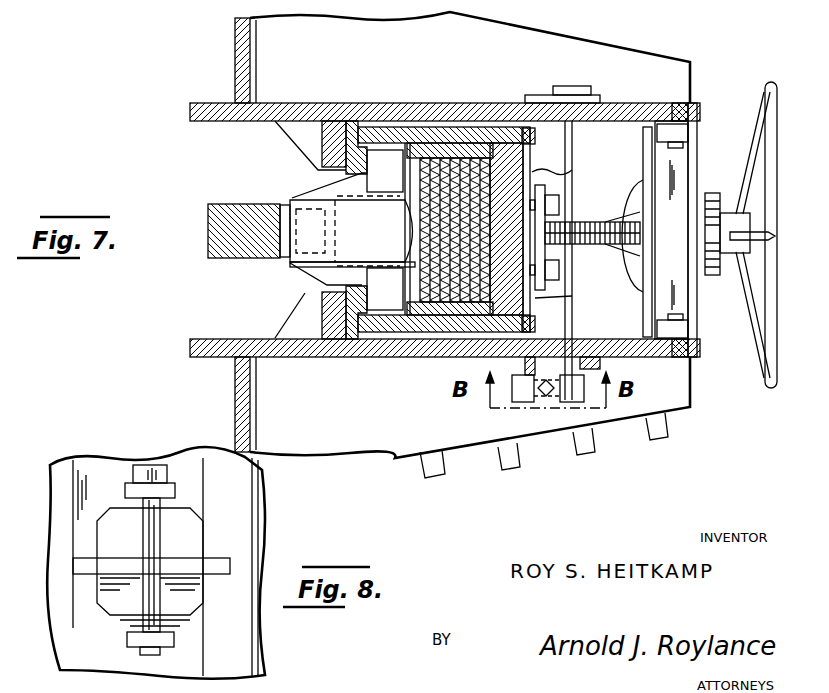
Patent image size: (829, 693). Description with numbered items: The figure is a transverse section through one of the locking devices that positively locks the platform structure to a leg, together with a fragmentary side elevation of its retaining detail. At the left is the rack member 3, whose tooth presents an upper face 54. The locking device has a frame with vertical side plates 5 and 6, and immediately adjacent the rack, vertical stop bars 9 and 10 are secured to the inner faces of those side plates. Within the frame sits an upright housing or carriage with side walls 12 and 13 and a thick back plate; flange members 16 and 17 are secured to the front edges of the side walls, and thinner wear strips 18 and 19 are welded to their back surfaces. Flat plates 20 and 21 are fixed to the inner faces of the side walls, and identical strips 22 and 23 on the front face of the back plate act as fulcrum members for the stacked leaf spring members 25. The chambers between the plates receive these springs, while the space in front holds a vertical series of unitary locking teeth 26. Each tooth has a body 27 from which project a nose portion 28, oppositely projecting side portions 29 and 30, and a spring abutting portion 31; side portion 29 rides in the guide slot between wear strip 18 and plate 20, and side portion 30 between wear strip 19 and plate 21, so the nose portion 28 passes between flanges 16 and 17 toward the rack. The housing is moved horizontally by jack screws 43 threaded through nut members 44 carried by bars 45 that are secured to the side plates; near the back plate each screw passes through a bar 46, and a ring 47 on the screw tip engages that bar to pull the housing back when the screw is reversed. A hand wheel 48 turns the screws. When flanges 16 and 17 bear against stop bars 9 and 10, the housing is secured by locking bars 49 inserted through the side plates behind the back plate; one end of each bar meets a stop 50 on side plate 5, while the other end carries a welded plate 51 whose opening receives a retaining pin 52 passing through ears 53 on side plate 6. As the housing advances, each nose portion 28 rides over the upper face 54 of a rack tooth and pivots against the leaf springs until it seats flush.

In FIG. 7, the rack member 3 is at (232, 205).
In FIG. 7, the vertical side plate 5 is at (378, 110).
In FIG. 7, the vertical side plate 6 is at (638, 357).
In FIG. 8, the vertical side plate 6 is at (62, 645).
In FIG. 7, the vertical stop bar 9 is at (322, 143).
In FIG. 7, the vertical stop bar 10 is at (322, 300).
In FIG. 7, the side wall 12 is at (400, 132).
In FIG. 7, the side wall 13 is at (398, 357).
In FIG. 7, the flange member 16 is at (354, 140).
In FIG. 7, the flange member 17 is at (352, 357).
In FIG. 7, the wear strip 18 is at (368, 183).
In FIG. 7, the wear strip 19 is at (368, 279).
In FIG. 7, the flat plate 20 is at (458, 148).
In FIG. 7, the flat plate 21 is at (440, 357).
In FIG. 7, the strip 22 is at (506, 229).
In FIG. 7, the strip 23 is at (495, 312).
In FIG. 7, the leaf spring member 25 is at (430, 250).
In FIG. 7, the locking tooth 26 is at (292, 265).
In FIG. 7, the body 27 is at (368, 241).
In FIG. 7, the nose portion 28 is at (295, 222).
In FIG. 7, the side portion 29 is at (392, 170).
In FIG. 7, the side portion 30 is at (392, 306).
In FIG. 7, the spring abutting portion 31 is at (410, 222).
In FIG. 7, the jack screw 43 is at (613, 255).
In FIG. 7, the nut member 44 is at (628, 208).
In FIG. 7, the bar 45 is at (648, 170).
In FIG. 7, the bar 46 is at (547, 246).
In FIG. 7, the ring 47 is at (546, 214).
In FIG. 7, the hand wheel 48 is at (768, 385).
In FIG. 7, the locking bar 49 is at (572, 162).
In FIG. 8, the locking bar 49 is at (195, 528).
In FIG. 7, the stop 50 is at (565, 96).
In FIG. 7, the plate 51 is at (530, 400).
In FIG. 8, the plate 51 is at (82, 558).
In FIG. 7, the retaining pin 52 is at (545, 398).
In FIG. 8, the retaining pin 52 is at (150, 540).
In FIG. 7, the ear 53 is at (556, 343).
In FIG. 8, the ear 53 is at (175, 492).
In FIG. 7, the upper face 54 is at (249, 231).